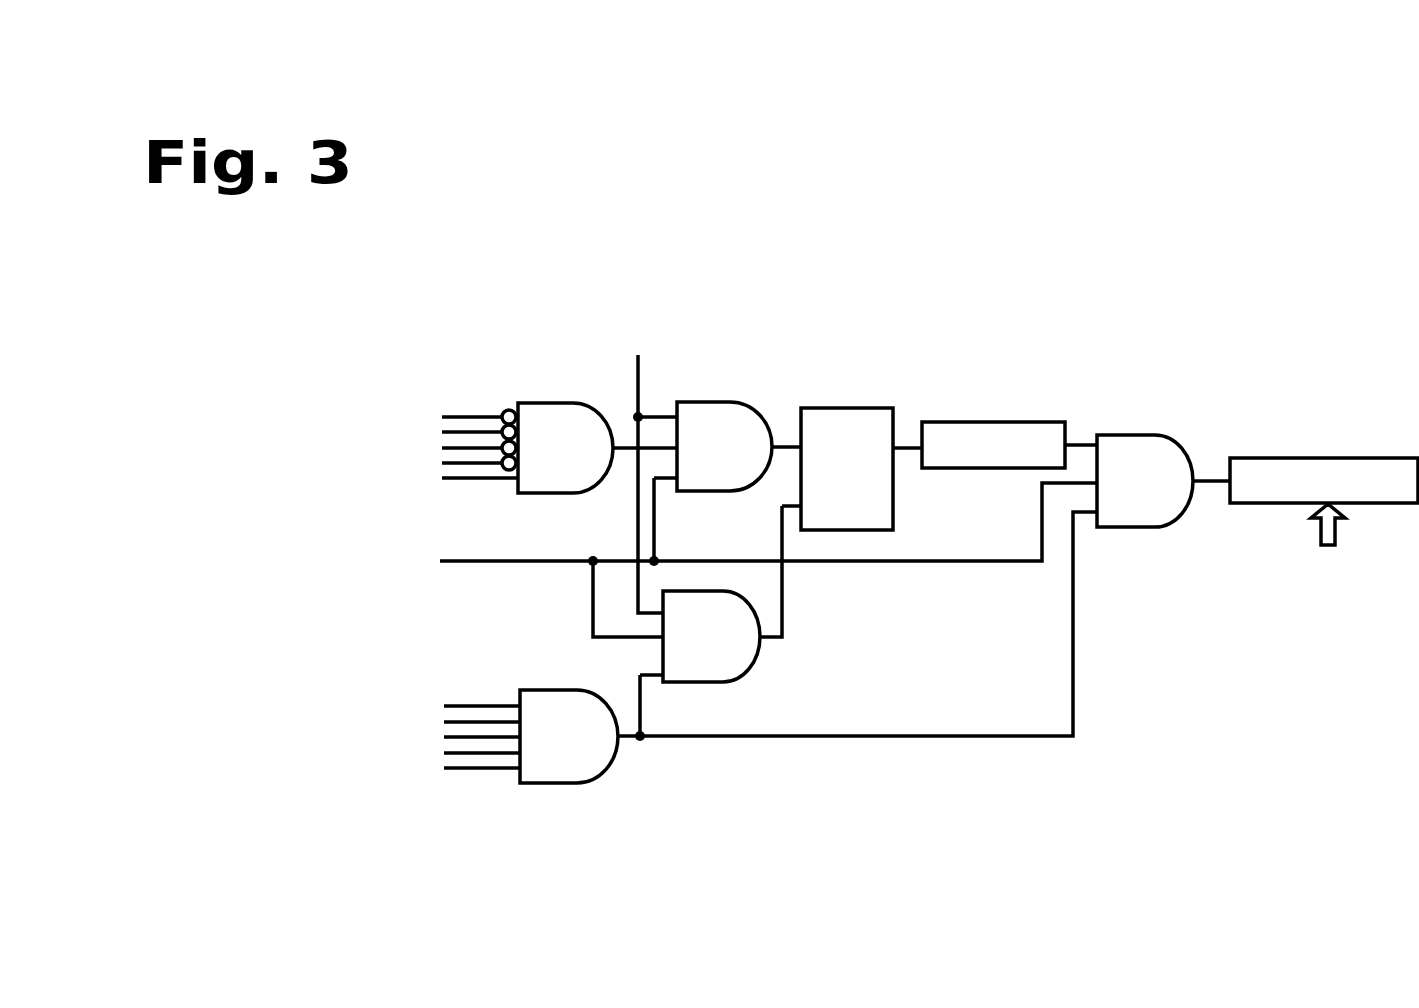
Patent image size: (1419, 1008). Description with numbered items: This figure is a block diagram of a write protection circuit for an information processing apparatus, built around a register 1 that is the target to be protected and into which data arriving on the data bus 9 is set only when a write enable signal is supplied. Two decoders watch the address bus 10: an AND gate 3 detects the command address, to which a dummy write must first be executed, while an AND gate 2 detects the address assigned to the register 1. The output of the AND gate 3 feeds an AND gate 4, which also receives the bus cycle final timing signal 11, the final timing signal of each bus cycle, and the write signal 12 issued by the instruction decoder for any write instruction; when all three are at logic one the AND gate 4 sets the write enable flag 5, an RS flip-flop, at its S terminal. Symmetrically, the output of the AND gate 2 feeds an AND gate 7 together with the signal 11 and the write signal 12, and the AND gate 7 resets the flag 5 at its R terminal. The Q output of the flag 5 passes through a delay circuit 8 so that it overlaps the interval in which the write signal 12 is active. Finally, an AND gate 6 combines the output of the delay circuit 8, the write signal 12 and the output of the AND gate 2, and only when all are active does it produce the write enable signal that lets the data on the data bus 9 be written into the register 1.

The register 1 is at (1304, 454).
The AND gate 2 is at (597, 778).
The AND gate 3 is at (545, 495).
The AND gate 4 is at (711, 400).
The write enable flag 5 is at (862, 388).
The AND gate 6 is at (1130, 528).
The AND gate 7 is at (745, 677).
The delay circuit 8 is at (977, 470).
The data bus 9 is at (1337, 548).
The address bus 10 is at (432, 463).
The bus cycle final timing signal 11 is at (614, 432).
The write signal 12 is at (432, 568).